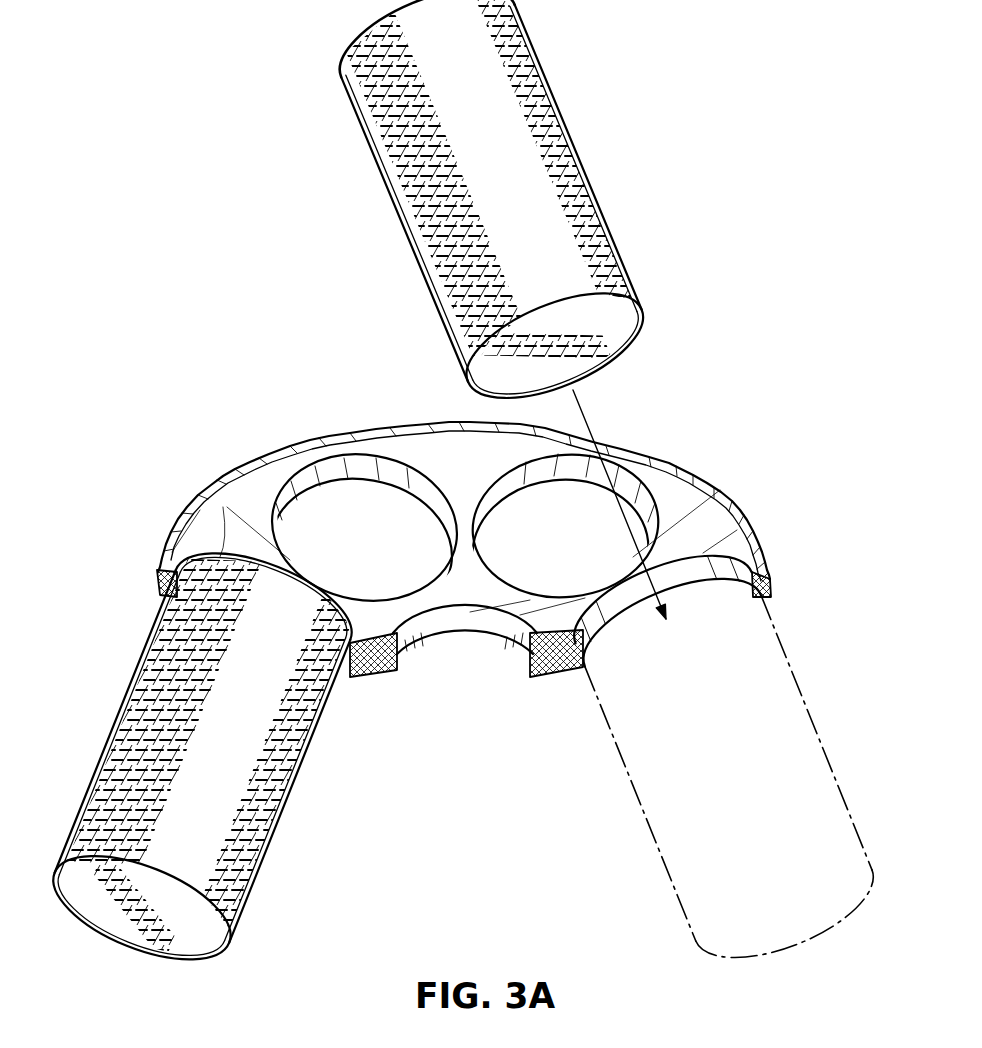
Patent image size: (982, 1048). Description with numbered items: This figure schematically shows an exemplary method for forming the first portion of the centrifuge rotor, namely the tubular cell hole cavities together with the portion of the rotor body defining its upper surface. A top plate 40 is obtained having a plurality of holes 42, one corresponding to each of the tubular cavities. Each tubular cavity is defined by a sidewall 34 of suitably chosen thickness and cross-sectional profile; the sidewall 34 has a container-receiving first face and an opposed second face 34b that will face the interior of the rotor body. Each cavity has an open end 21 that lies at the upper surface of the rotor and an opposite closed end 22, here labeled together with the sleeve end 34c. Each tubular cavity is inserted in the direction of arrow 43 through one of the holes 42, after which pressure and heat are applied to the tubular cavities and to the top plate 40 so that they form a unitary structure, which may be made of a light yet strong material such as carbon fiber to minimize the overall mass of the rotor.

The open end 21 is at (220, 555).
The closed end 22 is at (141, 911).
The sidewall 34 is at (548, 80).
The second face 34b is at (580, 187).
The sleeve end 34c is at (157, 955).
The top plate 40 is at (158, 572).
The holes 42 is at (352, 456).
The arrow 43 is at (585, 413).